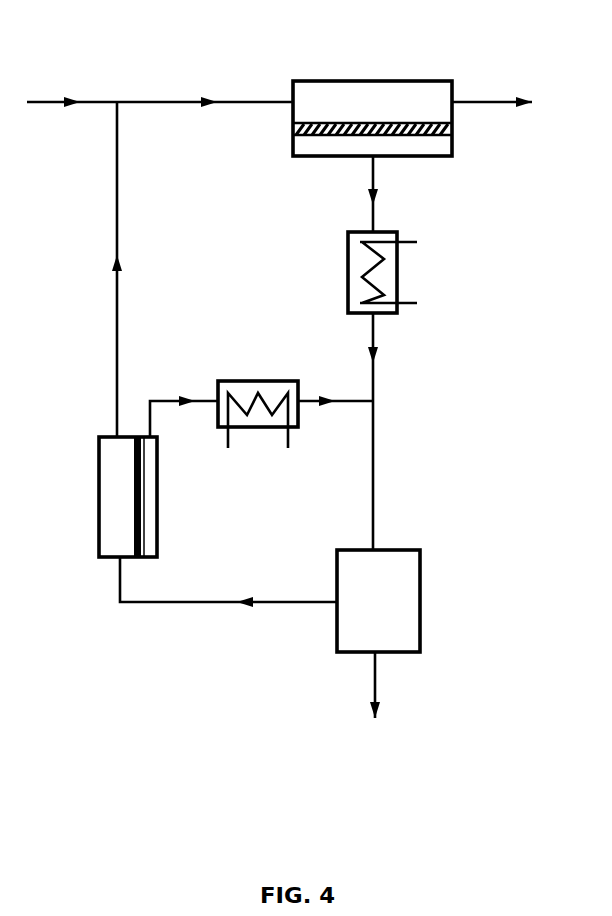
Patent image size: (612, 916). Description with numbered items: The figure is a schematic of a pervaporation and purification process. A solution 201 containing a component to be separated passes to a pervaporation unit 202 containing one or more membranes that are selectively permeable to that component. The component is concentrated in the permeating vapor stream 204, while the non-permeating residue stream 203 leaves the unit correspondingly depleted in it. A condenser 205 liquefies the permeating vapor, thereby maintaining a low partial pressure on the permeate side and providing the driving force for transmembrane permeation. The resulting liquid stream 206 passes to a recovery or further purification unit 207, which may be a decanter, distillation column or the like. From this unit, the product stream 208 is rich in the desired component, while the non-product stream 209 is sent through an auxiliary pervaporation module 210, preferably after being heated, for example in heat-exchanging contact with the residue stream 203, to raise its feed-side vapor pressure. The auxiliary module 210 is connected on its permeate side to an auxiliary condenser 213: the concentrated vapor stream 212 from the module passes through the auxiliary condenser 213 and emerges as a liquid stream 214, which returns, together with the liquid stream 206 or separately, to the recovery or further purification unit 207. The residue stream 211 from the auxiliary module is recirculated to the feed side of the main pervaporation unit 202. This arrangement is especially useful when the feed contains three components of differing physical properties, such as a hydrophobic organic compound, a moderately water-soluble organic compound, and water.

The solution 201 is at (160, 84).
The pervaporation unit 202 is at (362, 81).
The residue stream 203 is at (516, 102).
The vapor stream 204 is at (346, 194).
The condenser 205 is at (388, 232).
The liquid stream 206 is at (397, 357).
The recovery or further purification unit 207 is at (420, 553).
The product stream 208 is at (376, 704).
The non-product stream 209 is at (228, 599).
The auxiliary pervaporation module 210 is at (99, 527).
The residue stream 211 is at (87, 269).
The concentrated vapor stream 212 is at (184, 399).
The auxiliary condenser 213 is at (238, 381).
The liquid stream 214 is at (335, 384).